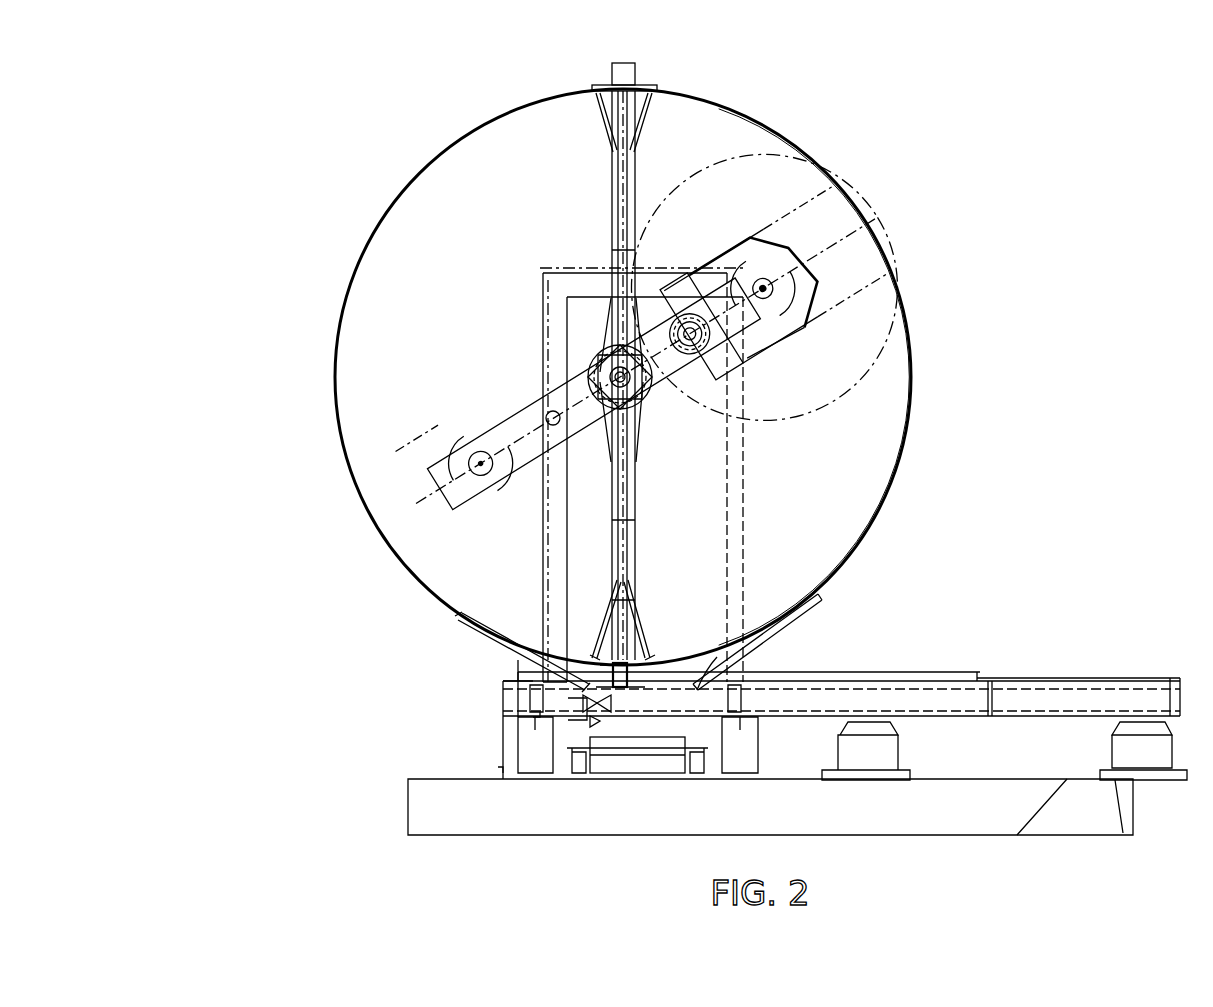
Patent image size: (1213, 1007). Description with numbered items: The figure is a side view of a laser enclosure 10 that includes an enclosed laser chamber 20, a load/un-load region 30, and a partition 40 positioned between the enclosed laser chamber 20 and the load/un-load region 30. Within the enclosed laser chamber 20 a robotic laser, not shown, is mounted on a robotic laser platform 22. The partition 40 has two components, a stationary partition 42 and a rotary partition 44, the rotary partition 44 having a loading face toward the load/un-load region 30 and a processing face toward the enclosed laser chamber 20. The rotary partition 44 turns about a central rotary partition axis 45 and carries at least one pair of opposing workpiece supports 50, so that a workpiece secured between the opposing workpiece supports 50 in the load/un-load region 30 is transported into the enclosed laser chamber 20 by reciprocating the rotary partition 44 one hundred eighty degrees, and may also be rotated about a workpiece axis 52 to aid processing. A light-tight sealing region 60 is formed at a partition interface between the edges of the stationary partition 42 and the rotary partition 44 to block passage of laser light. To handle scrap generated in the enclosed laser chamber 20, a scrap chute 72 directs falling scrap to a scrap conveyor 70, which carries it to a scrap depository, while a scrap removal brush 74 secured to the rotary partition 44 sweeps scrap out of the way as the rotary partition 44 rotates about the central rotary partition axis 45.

The laser enclosure 10 is at (249, 136).
The enclosed laser chamber 20 is at (940, 397).
The robotic laser platform 22 is at (1072, 681).
The load/un-load region 30 is at (401, 356).
The partition 40 is at (571, 167).
The stationary partition 42 is at (637, 72).
The rotary partition 44 is at (637, 176).
The central rotary partition axis 45 is at (648, 393).
The opposing workpiece supports 50 is at (788, 327).
The workpiece axis 52 is at (743, 273).
The light-tight sealing region 60 is at (555, 96).
The scrap conveyor 70 is at (667, 737).
The scrap chute 72 is at (587, 693).
The scrap removal brush 74 is at (656, 652).